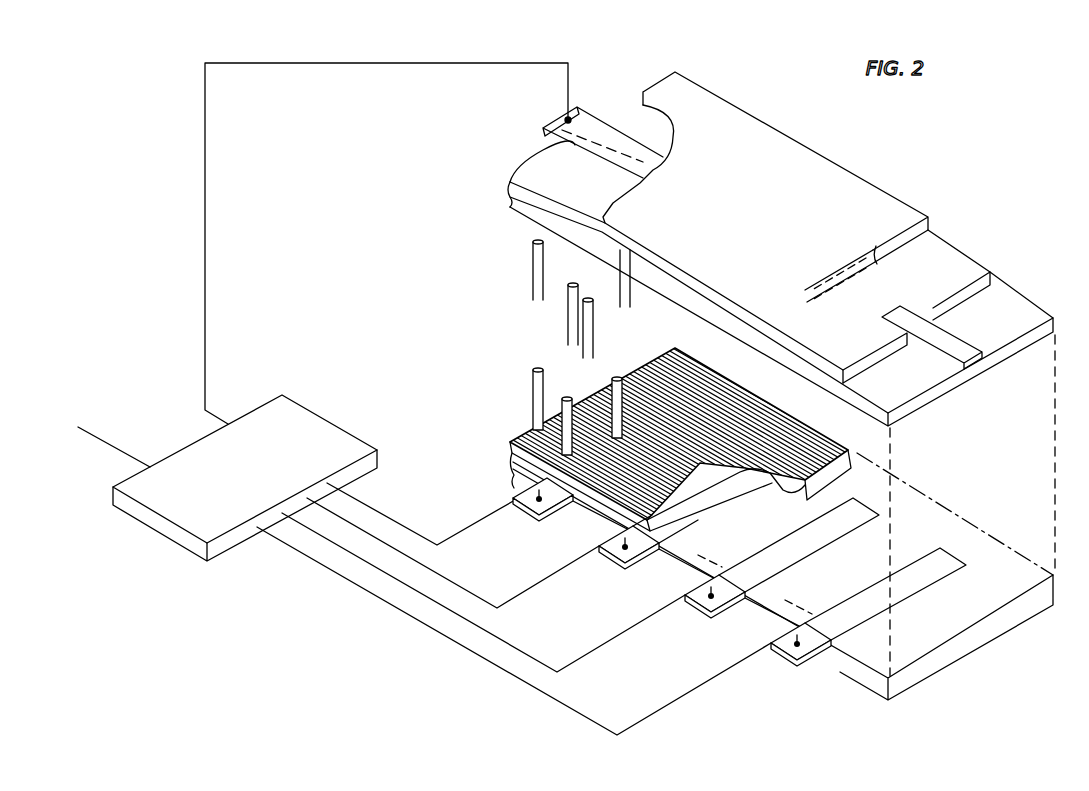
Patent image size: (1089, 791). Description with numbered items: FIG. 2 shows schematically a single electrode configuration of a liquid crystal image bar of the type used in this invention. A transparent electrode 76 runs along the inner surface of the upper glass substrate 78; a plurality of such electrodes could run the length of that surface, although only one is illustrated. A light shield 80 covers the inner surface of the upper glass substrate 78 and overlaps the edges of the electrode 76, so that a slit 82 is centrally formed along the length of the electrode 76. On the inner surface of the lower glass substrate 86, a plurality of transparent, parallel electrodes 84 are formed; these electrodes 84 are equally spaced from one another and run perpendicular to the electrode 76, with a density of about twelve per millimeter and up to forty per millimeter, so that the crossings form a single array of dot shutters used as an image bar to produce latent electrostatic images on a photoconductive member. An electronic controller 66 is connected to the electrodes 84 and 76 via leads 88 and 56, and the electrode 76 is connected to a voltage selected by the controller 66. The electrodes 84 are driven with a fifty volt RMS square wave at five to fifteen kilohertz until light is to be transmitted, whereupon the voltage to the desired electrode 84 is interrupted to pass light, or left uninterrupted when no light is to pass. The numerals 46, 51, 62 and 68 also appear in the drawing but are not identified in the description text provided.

The conductor strip 46 is at (592, 139).
The lead line 51 is at (124, 449).
The lead 56 is at (205, 147).
The conductor break 62 is at (872, 272).
The electronic controller 66 is at (303, 405).
The pins 68 is at (533, 380).
The transparent electrode 76 is at (596, 112).
The upper glass substrate 78 is at (892, 214).
The light shield 80 is at (808, 332).
The slit 82 is at (847, 290).
The transparent parallel electrodes 84 is at (807, 637).
The lower glass substrate 86 is at (945, 540).
The leads 88 is at (380, 570).